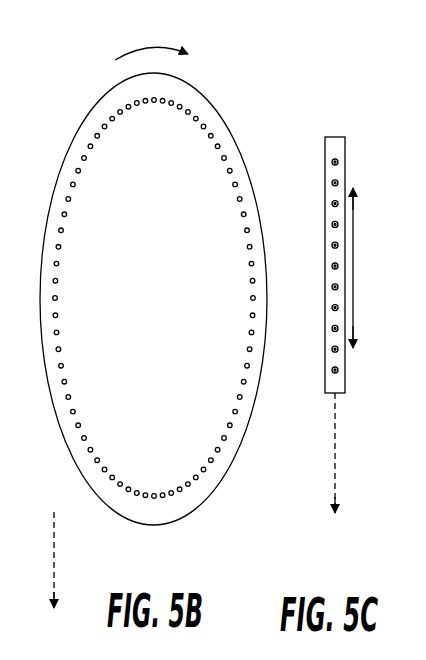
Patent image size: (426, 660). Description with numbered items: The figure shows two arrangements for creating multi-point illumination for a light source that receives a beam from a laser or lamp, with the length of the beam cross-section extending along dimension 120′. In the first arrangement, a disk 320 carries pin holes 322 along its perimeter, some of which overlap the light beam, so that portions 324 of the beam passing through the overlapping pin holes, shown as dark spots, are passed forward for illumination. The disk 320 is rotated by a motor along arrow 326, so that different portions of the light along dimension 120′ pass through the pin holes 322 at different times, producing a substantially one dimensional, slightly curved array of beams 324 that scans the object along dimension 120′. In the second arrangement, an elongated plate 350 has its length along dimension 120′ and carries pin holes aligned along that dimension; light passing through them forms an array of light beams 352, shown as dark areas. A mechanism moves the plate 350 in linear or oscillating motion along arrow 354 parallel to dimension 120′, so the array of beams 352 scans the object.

In FIG. 5B, the disk 320 is at (167, 312).
In FIG. 5B, the pin holes 322 is at (188, 108).
In FIG. 5B, the portions of the beam 324 is at (61, 230).
In FIG. 5B, the arrow 326 is at (150, 46).
In FIG. 5B, the dimension 120′ is at (54, 578).
In FIG. 5C, the dimension 120′ is at (337, 432).
In FIG. 5C, the elongated plate 350 is at (325, 380).
In FIG. 5C, the array of light beams 352 is at (332, 348).
In FIG. 5C, the arrow 354 is at (355, 252).